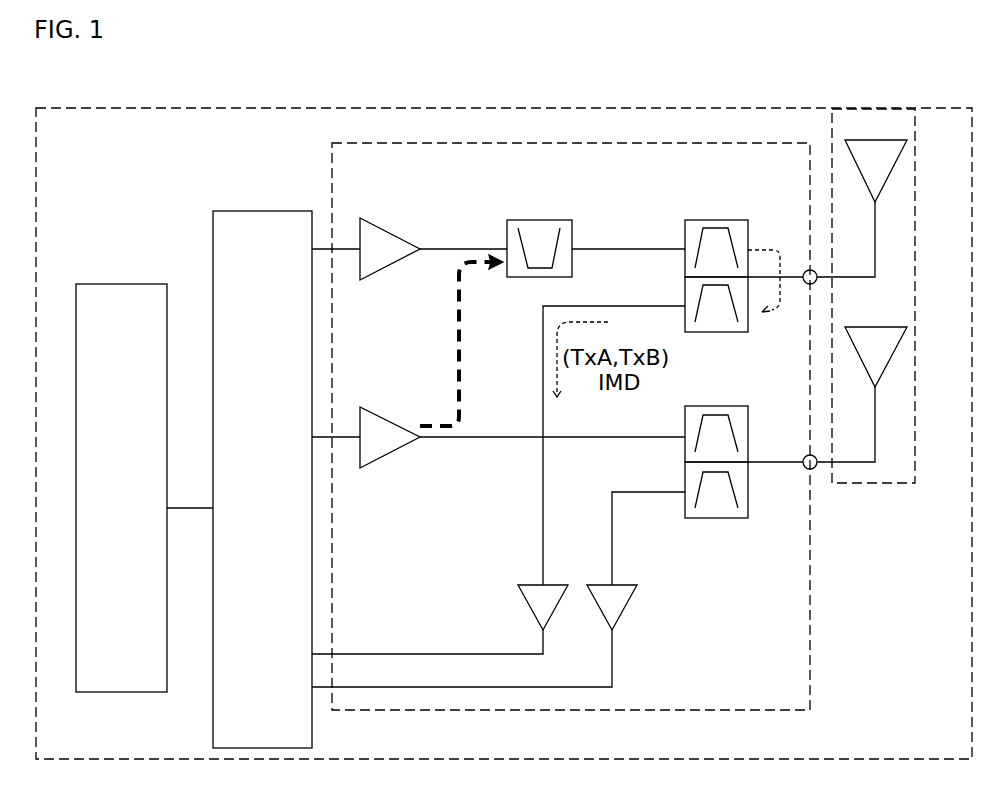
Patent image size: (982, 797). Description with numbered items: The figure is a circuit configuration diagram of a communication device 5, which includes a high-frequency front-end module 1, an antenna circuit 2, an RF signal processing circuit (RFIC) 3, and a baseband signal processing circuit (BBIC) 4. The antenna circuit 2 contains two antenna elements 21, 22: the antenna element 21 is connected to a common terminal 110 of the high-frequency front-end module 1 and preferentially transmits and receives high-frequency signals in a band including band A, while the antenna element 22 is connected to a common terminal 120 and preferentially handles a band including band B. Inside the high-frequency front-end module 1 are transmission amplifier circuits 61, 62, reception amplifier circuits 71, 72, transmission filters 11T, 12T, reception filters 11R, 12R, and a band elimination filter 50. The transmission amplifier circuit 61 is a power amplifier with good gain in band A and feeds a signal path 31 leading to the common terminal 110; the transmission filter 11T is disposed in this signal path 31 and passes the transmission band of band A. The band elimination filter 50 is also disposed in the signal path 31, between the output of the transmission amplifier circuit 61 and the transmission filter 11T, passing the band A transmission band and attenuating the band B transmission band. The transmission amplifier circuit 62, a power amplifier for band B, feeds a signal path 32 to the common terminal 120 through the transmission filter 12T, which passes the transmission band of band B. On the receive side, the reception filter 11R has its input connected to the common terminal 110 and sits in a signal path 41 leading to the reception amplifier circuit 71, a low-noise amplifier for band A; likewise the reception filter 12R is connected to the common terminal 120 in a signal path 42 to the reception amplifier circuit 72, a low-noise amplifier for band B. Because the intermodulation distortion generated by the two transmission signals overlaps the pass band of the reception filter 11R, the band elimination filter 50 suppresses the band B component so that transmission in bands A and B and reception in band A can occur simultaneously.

The high-frequency front-end module 1 is at (718, 143).
The antenna circuit 2 is at (915, 197).
The RF signal processing circuit (RFIC) 3 is at (248, 211).
The baseband signal processing circuit (BBIC) 4 is at (118, 284).
The communication device 5 is at (182, 109).
The transmission filter 11T is at (748, 233).
The reception filter 11R is at (748, 320).
The transmission filter 12T is at (748, 428).
The reception filter 12R is at (748, 490).
The antenna element 21 is at (860, 138).
The antenna element 22 is at (860, 325).
The signal path 31 is at (593, 249).
The signal path 32 is at (473, 437).
The signal path 41 is at (543, 503).
The signal path 42 is at (612, 533).
The band elimination filter 50 is at (523, 219).
The transmission amplifier circuit 61 is at (380, 223).
The transmission amplifier circuit 62 is at (380, 410).
The reception amplifier circuit 71 is at (528, 583).
The reception amplifier circuit 72 is at (627, 580).
The common terminal 110 is at (817, 280).
The common terminal 120 is at (815, 470).